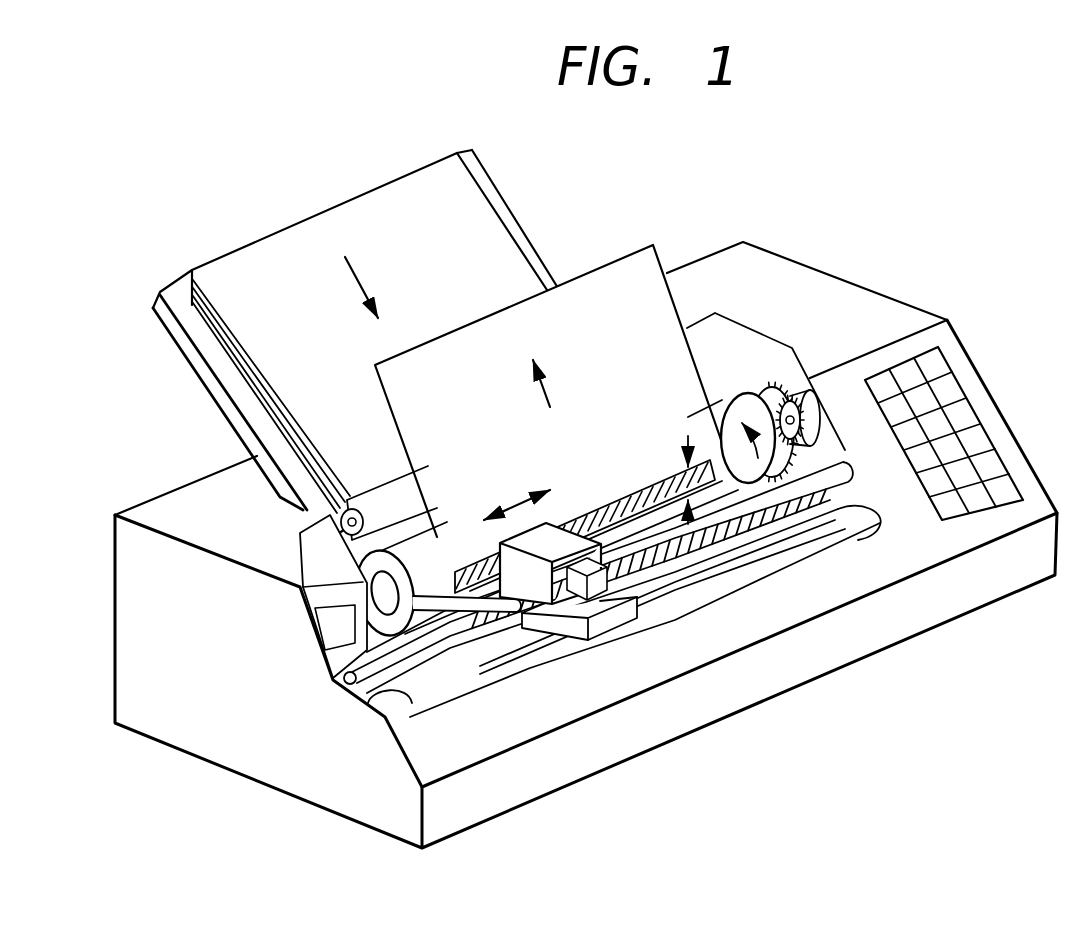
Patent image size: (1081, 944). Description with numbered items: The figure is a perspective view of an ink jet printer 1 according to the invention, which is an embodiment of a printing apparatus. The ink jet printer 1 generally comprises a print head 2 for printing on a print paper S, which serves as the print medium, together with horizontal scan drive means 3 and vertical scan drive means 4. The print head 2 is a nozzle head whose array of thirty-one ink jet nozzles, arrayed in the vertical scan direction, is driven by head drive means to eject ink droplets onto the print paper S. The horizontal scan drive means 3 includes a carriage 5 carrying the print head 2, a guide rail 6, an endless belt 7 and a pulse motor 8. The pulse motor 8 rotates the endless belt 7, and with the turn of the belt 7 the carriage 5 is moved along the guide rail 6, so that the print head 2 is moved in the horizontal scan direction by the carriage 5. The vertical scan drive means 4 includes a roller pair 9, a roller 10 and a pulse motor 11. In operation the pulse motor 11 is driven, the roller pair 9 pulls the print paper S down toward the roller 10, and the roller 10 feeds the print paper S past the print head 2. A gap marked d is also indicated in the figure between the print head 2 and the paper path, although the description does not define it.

The ink jet printer 1 is at (786, 202).
The print head 2 is at (550, 523).
The horizontal scan drive means 3 is at (430, 728).
The vertical scan drive means 4 is at (247, 500).
The carriage 5 is at (617, 622).
The guide rail 6 is at (340, 655).
The endless belt 7 is at (385, 705).
The pulse motor 8 is at (377, 705).
The roller pair 9 is at (388, 500).
The roller 10 is at (427, 547).
The pulse motor 11 is at (812, 400).
The print paper S is at (262, 332).
The gap d is at (673, 480).